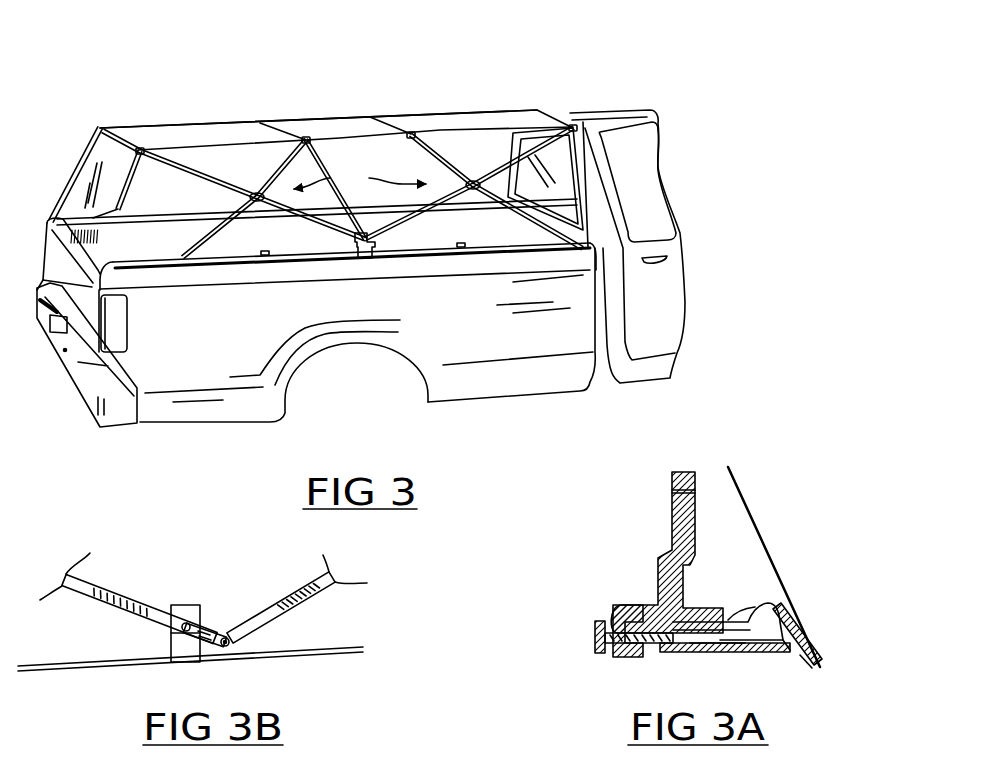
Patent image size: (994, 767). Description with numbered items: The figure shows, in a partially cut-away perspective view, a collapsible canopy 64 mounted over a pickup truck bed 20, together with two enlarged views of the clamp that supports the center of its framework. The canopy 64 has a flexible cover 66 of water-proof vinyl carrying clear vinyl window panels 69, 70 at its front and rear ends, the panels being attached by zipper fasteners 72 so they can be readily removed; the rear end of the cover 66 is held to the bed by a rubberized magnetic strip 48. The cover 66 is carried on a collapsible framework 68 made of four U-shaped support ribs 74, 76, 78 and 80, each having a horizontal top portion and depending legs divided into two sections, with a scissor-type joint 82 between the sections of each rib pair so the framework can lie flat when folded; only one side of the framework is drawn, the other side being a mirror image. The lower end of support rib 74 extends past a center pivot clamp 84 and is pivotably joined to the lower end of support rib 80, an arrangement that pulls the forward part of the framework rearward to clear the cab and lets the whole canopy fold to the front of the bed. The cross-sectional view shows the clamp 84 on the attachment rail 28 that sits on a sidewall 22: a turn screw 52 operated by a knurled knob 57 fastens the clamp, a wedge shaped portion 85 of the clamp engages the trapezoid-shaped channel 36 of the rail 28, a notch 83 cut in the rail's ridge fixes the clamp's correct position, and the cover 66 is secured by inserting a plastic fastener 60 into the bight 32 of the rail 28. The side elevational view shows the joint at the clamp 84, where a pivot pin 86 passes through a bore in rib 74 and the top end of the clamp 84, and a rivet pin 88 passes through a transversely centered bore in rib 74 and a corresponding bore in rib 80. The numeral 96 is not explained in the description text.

In FIG. 3, the pickup truck bed 20 is at (410, 400).
In FIG. 3, the sidewall 22 is at (241, 332).
In FIG. 3A, the attachment rail 28 is at (690, 650).
In FIG. 3A, the bight 32 is at (808, 617).
In FIG. 3A, the trapezoid-shaped channel 36 is at (715, 623).
In FIG. 3, the rubberized magnetic strip 48 is at (93, 289).
In FIG. 3A, the turn screw 52 is at (630, 608).
In FIG. 3A, the knurled knob 57 is at (593, 637).
In FIG. 3A, the plastic fastener 60 is at (805, 665).
In FIG. 3, the collapsible canopy 64 is at (491, 88).
In FIG. 3, the flexible cover 66 is at (245, 127).
In FIG. 3A, the flexible cover 66 is at (765, 534).
In FIG. 3, the collapsible framework 68 is at (360, 178).
In FIG. 3, the front window panel 69 is at (567, 211).
In FIG. 3, the rear window panel 70 is at (82, 200).
In FIG. 3, the zipper fastener 72 is at (90, 151).
In FIG. 3, the U-shaped support rib 74 is at (193, 176).
In FIG. 3B, the U-shaped support rib 74 is at (93, 595).
In FIG. 3, the U-shaped support rib 76 is at (277, 168).
In FIG. 3, the U-shaped support rib 78 is at (432, 163).
In FIG. 3, the U-shaped support rib 80 is at (509, 165).
In FIG. 3B, the U-shaped support rib 80 is at (312, 590).
In FIG. 3, the scissor-type joint 82 is at (258, 202).
In FIG. 3A, the notch 83 is at (727, 617).
In FIG. 3, the center pivot clamp 84 is at (365, 258).
In FIG. 3B, the center pivot clamp 84 is at (198, 612).
In FIG. 3A, the center pivot clamp 84 is at (677, 522).
In FIG. 3A, the wedge shaped portion 85 is at (690, 645).
In FIG. 3B, the pivot pin 86 is at (182, 626).
In FIG. 3B, the rivet pin 88 is at (233, 643).
In FIG. 3, the slide hinge 96 is at (162, 148).